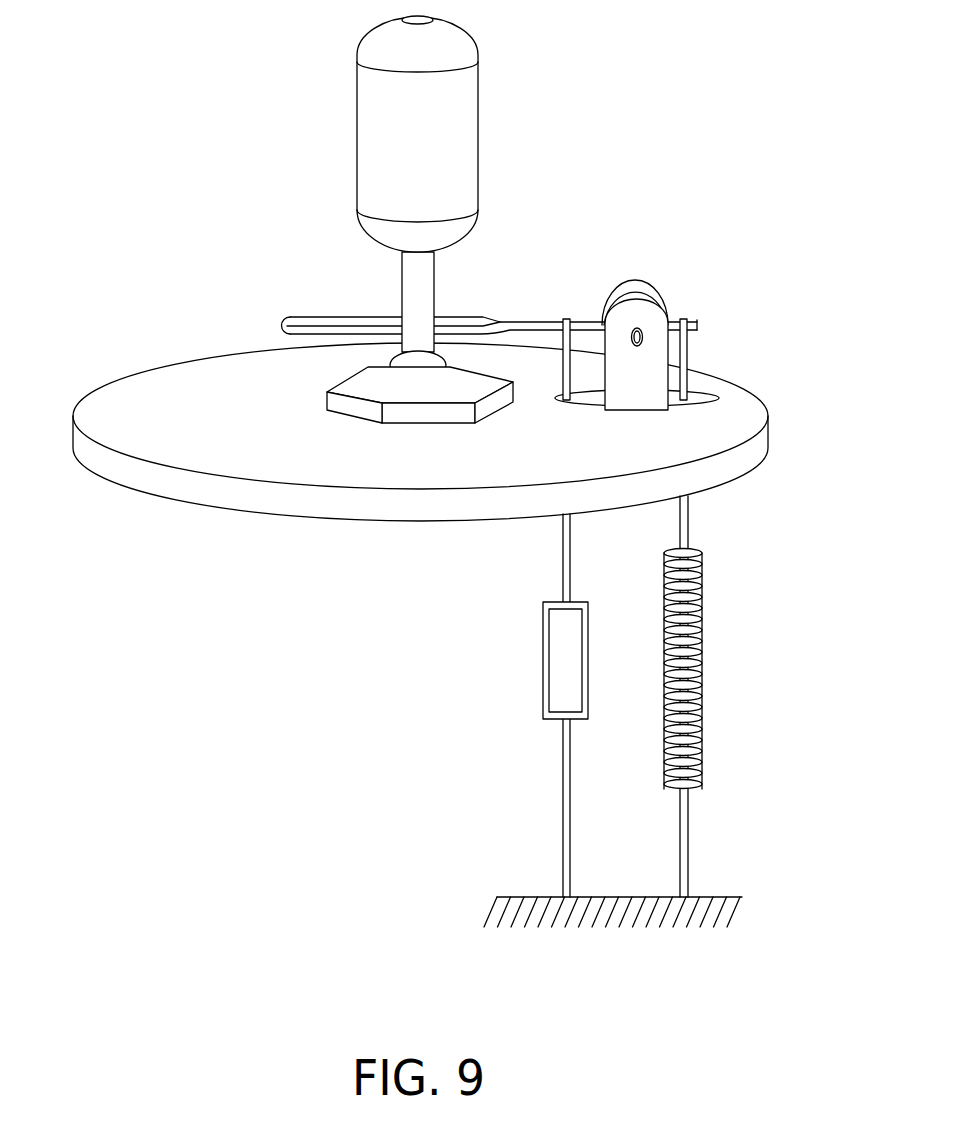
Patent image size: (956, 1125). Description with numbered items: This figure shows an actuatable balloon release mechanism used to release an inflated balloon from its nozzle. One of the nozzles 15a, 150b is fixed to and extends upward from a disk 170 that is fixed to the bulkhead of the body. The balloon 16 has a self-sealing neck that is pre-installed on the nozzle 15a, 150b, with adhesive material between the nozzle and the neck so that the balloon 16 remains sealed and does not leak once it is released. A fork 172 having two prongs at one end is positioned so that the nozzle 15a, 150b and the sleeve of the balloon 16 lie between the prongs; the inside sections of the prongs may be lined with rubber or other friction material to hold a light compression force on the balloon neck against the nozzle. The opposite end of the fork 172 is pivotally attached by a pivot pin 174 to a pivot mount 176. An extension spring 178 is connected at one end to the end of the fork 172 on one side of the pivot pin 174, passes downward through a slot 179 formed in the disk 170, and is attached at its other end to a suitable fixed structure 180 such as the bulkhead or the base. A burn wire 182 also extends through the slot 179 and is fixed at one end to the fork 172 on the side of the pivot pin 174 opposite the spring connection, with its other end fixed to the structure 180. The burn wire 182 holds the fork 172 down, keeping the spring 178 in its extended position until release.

The balloon 16 is at (327, 67).
The fork 172 is at (306, 308).
The connector 15a is at (335, 337).
The nozzle 150b is at (330, 374).
The disk 170 is at (116, 366).
The pivot pin 174 is at (641, 331).
The pivot mount 176 is at (640, 365).
The slot 179 is at (700, 393).
The extension spring 178 is at (719, 666).
The burn wire 182 is at (530, 663).
The fixed structure 180 is at (469, 894).